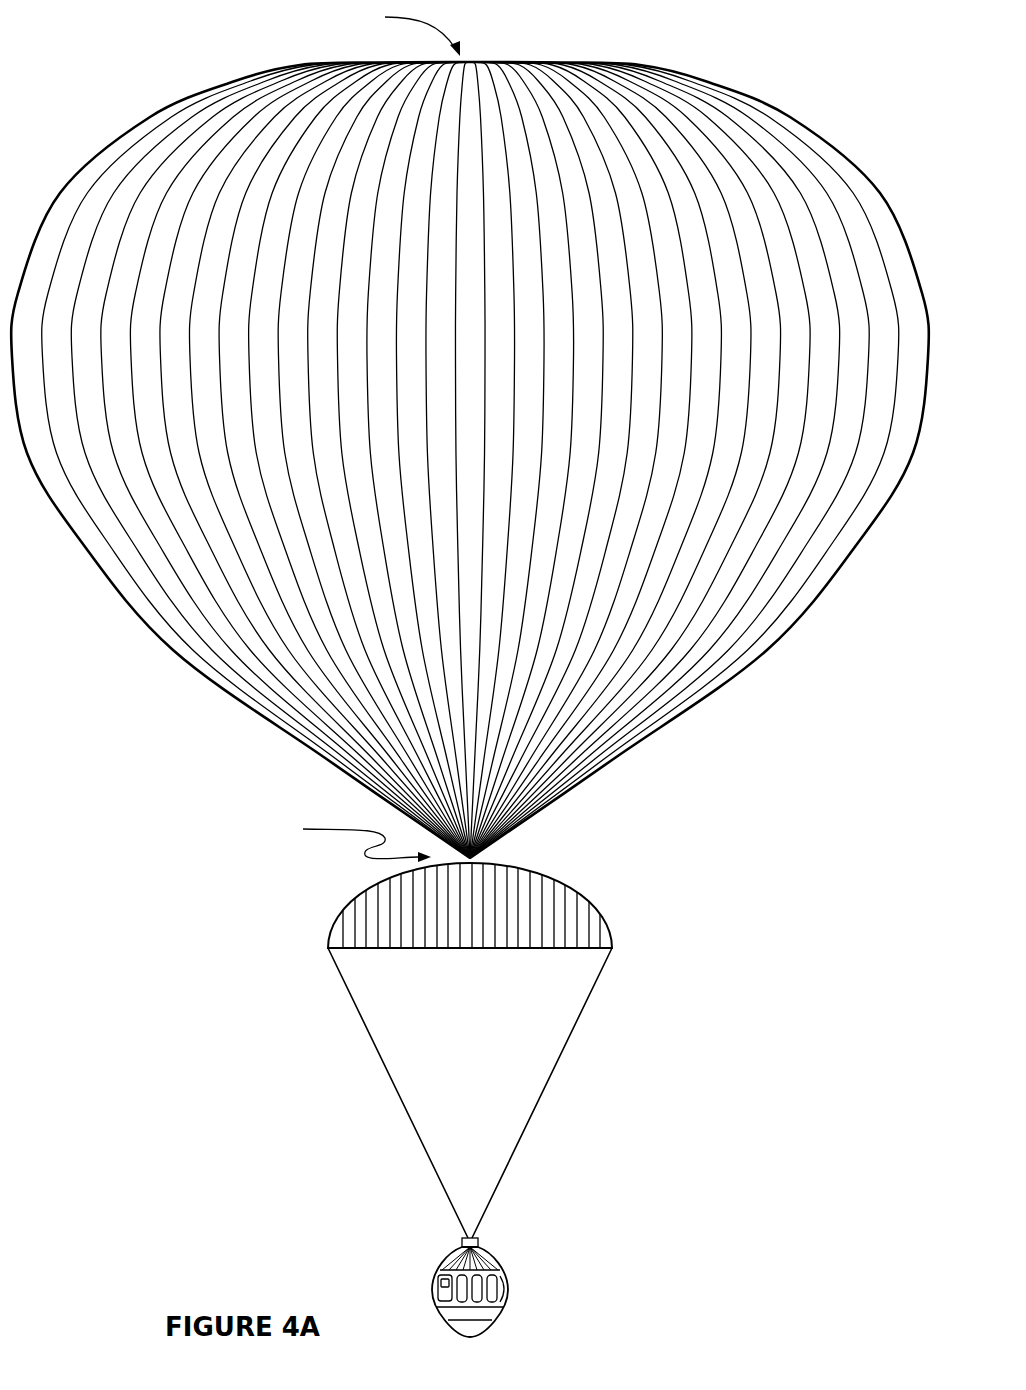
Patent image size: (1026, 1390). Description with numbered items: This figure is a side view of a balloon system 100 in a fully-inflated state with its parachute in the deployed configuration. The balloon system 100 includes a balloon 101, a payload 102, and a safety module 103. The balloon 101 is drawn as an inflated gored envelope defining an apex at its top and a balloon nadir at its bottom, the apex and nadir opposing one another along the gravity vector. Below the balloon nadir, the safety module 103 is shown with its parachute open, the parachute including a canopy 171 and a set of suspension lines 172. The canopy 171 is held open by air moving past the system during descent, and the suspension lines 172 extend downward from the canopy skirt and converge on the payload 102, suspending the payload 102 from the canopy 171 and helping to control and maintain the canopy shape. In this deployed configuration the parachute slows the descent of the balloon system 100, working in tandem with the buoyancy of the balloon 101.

The balloon system 100 is at (680, 45).
The balloon 101 is at (778, 660).
The payload 102 is at (528, 1298).
The safety module 103 is at (499, 1036).
The canopy 171 is at (540, 913).
The set of suspension lines 172 is at (453, 1018).